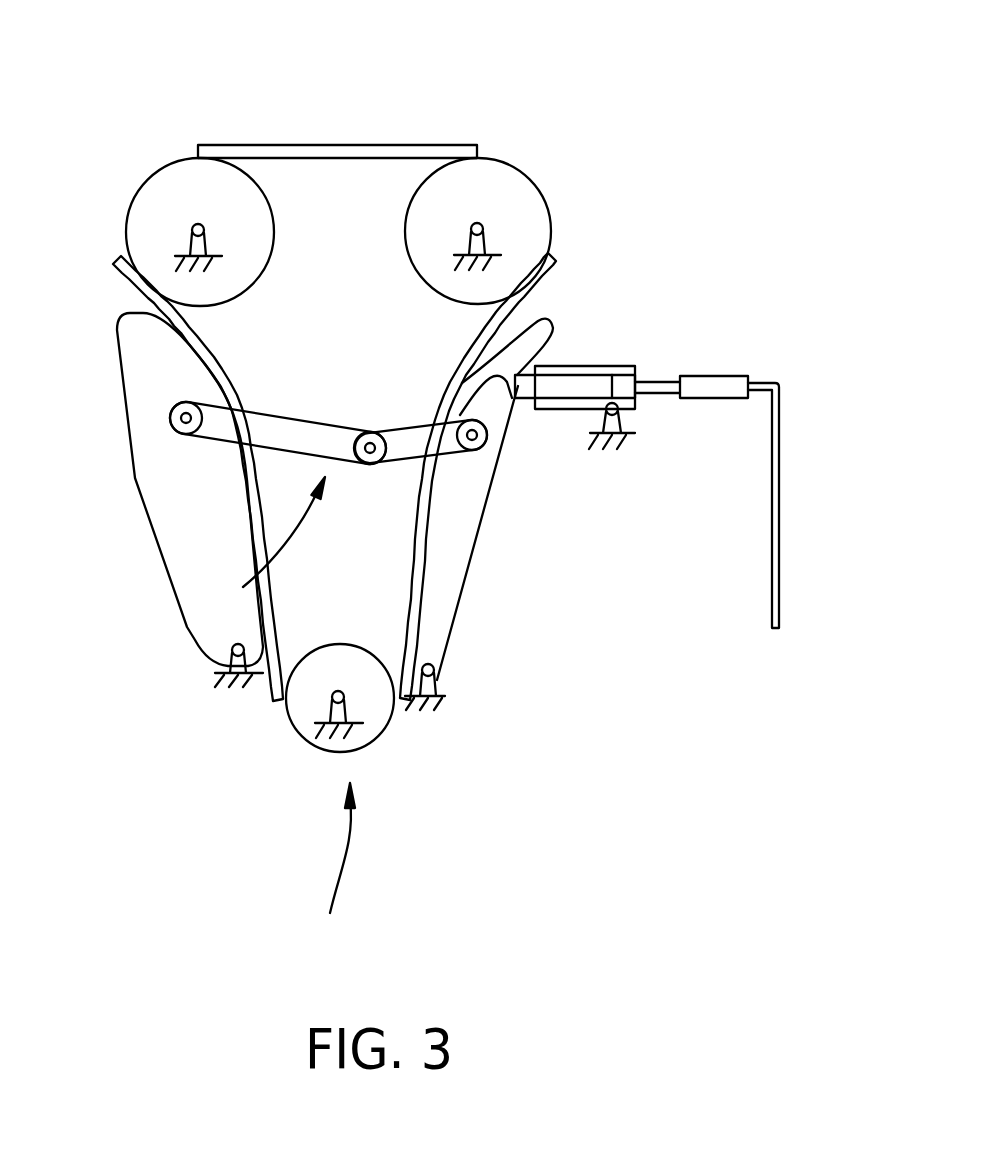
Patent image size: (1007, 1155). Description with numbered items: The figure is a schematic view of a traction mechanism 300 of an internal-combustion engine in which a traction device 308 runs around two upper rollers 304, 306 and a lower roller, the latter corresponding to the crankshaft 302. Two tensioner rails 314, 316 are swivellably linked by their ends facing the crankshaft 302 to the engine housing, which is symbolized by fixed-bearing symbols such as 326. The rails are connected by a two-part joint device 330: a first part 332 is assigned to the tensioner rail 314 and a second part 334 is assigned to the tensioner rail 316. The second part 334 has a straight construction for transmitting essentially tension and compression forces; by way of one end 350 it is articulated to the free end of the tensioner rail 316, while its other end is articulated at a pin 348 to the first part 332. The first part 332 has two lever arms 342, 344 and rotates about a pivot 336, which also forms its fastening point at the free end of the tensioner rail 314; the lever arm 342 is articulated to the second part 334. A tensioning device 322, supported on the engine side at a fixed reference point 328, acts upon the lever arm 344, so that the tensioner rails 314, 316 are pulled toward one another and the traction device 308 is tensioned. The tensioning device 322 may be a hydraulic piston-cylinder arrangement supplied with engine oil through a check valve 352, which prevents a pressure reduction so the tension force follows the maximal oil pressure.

The traction mechanism 300 is at (329, 869).
The crankshaft 302 is at (300, 697).
The right upper roller 304 is at (483, 210).
The left upper roller 306 is at (177, 202).
The traction device 308 is at (337, 146).
The tensioner rail 314 is at (442, 600).
The tensioner rail 316 is at (188, 532).
The tensioning device 322 is at (583, 385).
The fixed-bearing symbol 326 is at (440, 687).
The fixed reference point 328 is at (628, 433).
The two-part joint device 330 is at (256, 545).
The first part of the joint device 332 is at (445, 442).
The second part of the joint device 334 is at (265, 430).
The pivot 336 is at (480, 443).
The lever arm 342 is at (433, 443).
The lever arm 344 is at (540, 322).
The pivot pin 348 is at (337, 447).
The end of the second part 350 is at (213, 428).
The check valve 352 is at (722, 380).